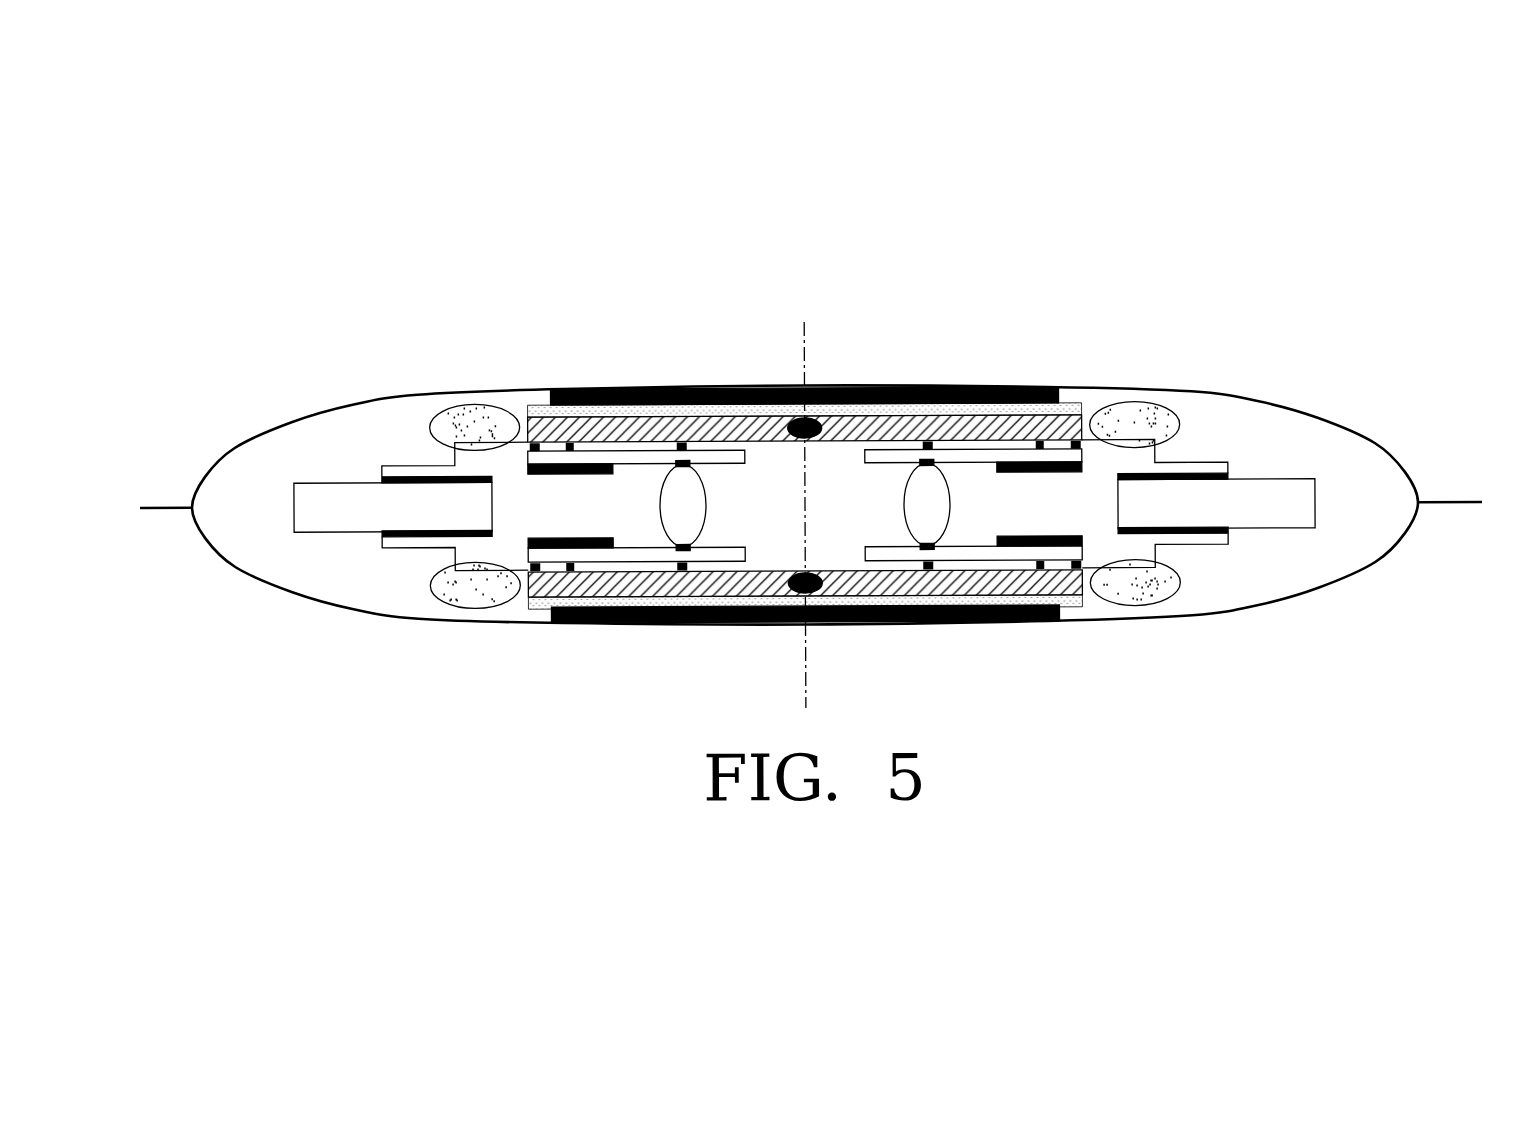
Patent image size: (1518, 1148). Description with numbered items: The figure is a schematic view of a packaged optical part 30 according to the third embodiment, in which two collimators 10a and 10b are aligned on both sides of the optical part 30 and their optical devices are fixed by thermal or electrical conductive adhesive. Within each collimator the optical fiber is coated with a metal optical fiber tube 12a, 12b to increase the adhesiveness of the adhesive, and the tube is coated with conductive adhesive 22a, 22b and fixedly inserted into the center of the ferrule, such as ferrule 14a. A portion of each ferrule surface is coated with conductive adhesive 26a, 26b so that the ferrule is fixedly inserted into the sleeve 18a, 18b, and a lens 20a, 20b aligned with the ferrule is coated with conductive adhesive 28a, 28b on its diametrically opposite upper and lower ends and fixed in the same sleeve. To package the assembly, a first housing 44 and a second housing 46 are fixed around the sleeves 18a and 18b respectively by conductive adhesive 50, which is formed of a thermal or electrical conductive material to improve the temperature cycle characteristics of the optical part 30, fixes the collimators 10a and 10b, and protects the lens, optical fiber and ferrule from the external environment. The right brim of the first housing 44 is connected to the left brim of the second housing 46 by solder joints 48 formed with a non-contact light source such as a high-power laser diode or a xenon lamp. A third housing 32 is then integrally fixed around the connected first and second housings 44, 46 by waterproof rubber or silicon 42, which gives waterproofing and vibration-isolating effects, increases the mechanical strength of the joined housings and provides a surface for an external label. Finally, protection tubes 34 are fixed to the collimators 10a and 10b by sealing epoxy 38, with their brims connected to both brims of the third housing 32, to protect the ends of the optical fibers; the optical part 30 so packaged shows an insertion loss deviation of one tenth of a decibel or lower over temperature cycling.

The collimator 10a is at (1225, 511).
The collimator 10b is at (386, 529).
The metal optical fiber tube 12a is at (1290, 536).
The metal optical fiber tube 12b is at (338, 522).
The ferrule 14a is at (1215, 466).
The sleeve 18a is at (877, 458).
The sleeve 18b is at (730, 458).
The lens 20a is at (906, 503).
The lens 20b is at (704, 504).
The conductive adhesive 22a is at (1226, 548).
The conductive adhesive 22b is at (388, 540).
The conductive adhesive 26a is at (1038, 548).
The conductive adhesive 26b is at (574, 548).
The conductive adhesive 28a is at (924, 549).
The conductive adhesive 28b is at (682, 549).
The optical part 30 is at (1262, 332).
The third housing 32 is at (975, 406).
The protection tube 34 is at (352, 403).
The sealing epoxy 38 is at (460, 416).
The waterproof rubber or silicon 42 is at (743, 623).
The first housing 44 is at (652, 388).
The second housing 46 is at (1003, 425).
The solder joint 48 is at (798, 420).
The conductive adhesive 50 is at (570, 444).